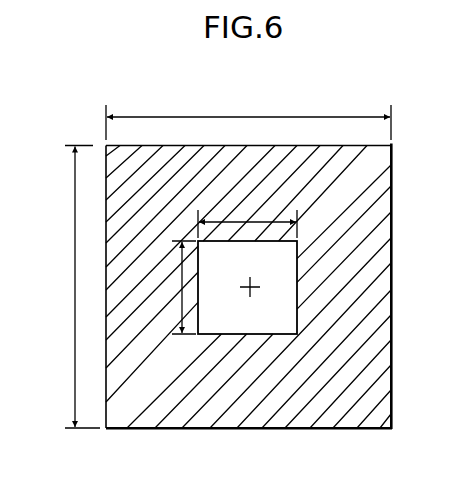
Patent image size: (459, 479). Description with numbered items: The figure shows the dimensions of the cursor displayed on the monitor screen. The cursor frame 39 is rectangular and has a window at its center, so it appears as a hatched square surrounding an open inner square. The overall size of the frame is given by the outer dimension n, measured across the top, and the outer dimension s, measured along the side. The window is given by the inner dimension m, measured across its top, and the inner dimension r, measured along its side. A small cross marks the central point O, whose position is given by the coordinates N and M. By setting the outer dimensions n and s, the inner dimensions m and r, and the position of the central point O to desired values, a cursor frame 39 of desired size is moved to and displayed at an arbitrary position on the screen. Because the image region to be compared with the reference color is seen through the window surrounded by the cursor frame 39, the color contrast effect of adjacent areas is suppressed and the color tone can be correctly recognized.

The cursor frame 39 is at (148, 413).
The outer dimension n is at (248, 117).
The outer dimension s is at (77, 287).
The inner dimension m is at (247, 220).
The inner dimension r is at (178, 287).
The central point O is at (245, 291).